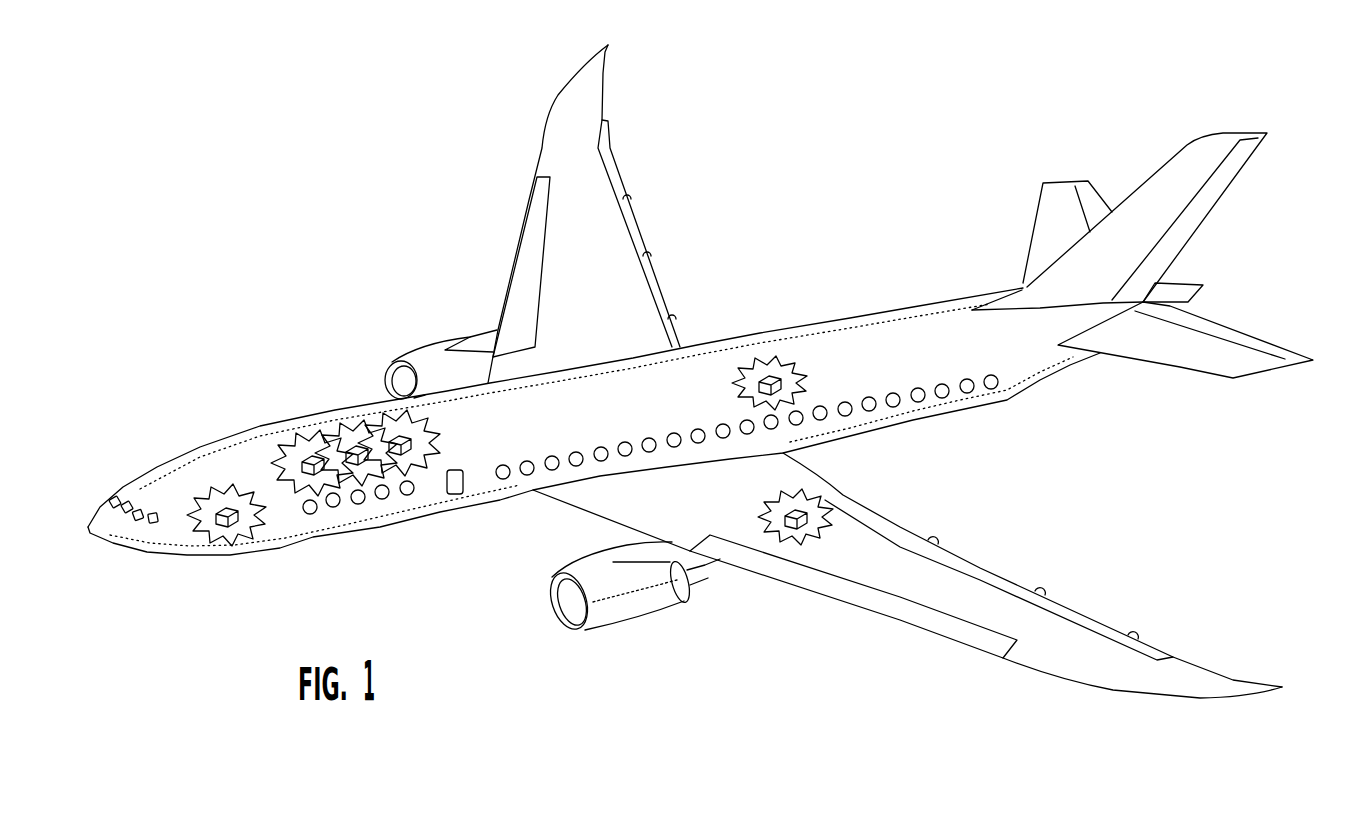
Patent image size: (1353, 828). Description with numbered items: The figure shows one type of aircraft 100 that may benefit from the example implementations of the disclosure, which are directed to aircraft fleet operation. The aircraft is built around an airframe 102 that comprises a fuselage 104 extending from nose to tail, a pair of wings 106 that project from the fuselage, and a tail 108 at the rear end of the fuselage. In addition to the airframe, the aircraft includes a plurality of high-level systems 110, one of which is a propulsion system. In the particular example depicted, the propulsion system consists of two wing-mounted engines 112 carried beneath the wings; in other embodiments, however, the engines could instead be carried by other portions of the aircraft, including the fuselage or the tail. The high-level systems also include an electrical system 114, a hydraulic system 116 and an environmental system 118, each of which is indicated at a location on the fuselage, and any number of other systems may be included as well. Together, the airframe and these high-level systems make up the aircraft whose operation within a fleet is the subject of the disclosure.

The aircraft 100 is at (327, 218).
The airframe 102 is at (330, 404).
The fuselage 104 is at (348, 535).
The wings 106 is at (542, 152).
The tail 108 is at (995, 203).
The high-level systems 110 is at (1123, 502).
The wing-mounted engines 112 is at (423, 350).
The electrical system 114 is at (227, 507).
The hydraulic system 116 is at (793, 510).
The environmental system 118 is at (773, 377).